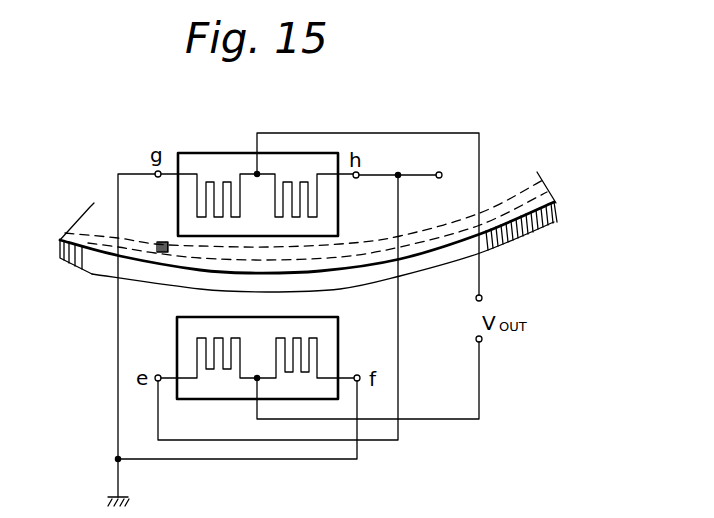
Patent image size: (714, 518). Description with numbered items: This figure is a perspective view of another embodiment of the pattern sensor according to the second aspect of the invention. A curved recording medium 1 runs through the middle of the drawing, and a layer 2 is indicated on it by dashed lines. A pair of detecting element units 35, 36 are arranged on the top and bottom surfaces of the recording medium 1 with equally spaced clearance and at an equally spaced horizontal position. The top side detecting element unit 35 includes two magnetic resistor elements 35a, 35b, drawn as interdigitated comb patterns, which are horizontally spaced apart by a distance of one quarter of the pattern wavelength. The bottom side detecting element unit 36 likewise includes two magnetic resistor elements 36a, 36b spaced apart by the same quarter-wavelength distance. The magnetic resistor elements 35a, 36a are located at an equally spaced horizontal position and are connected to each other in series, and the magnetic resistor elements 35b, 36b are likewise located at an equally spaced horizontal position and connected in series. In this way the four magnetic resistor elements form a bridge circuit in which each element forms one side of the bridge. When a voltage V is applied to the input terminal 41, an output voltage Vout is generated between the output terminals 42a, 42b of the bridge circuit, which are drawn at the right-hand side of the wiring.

The recording medium 1 is at (103, 267).
The thin film strain gauge layer 2 is at (160, 242).
The top side detecting element unit 35 is at (254, 166).
The magnetic resistor element 35a is at (210, 182).
The magnetic resistor element 35b is at (290, 181).
The bottom side detecting element unit 36 is at (257, 406).
The magnetic resistor element 36a is at (208, 378).
The magnetic resistor element 36b is at (290, 373).
The input terminal 41 is at (439, 178).
The output terminal 42a is at (482, 297).
The output terminal 42b is at (482, 341).